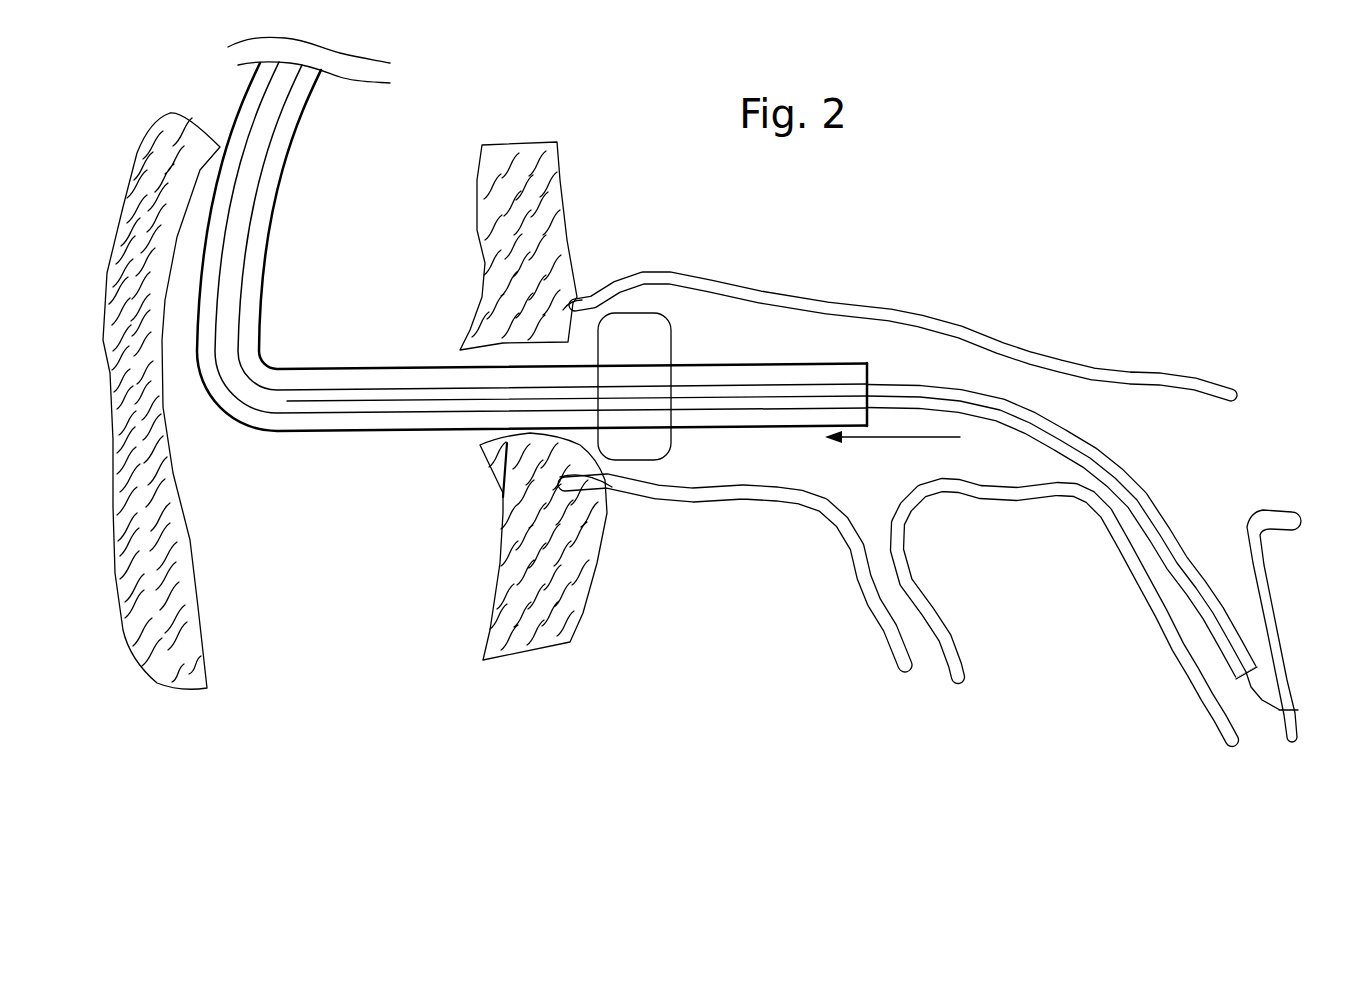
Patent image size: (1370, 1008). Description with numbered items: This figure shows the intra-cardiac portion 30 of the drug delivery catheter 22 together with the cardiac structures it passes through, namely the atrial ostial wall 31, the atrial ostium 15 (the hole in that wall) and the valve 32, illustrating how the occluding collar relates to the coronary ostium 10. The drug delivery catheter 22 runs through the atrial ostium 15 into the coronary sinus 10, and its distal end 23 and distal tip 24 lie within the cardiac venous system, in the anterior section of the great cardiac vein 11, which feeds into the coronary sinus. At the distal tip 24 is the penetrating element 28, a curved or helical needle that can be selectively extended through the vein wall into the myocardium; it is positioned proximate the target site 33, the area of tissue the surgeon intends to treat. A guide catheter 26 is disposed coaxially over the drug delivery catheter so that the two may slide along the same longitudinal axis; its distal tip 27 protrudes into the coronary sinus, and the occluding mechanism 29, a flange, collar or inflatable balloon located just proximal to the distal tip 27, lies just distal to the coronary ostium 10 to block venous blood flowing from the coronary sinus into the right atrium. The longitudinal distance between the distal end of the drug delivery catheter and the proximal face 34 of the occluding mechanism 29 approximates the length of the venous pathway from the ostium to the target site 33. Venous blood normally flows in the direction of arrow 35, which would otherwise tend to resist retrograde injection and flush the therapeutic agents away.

The coronary ostium 10 is at (726, 472).
The great cardiac vein 11 is at (1107, 368).
The atrial ostium 15 is at (496, 357).
The drug delivery catheter 22 is at (862, 362).
The distal end 23 is at (1230, 617).
The distal tip 24 is at (1253, 667).
The guide catheter 26 is at (705, 347).
The distal tip 27 is at (780, 347).
The penetrating element 28 is at (1230, 727).
The occluding mechanism 29 is at (657, 312).
The intra-cardiac portion 30 is at (313, 348).
The atrial ostial wall 31 is at (505, 220).
The valve 32 is at (477, 442).
The target site 33 is at (1360, 713).
The proximal face 34 is at (612, 487).
The arrow 35 is at (892, 455).